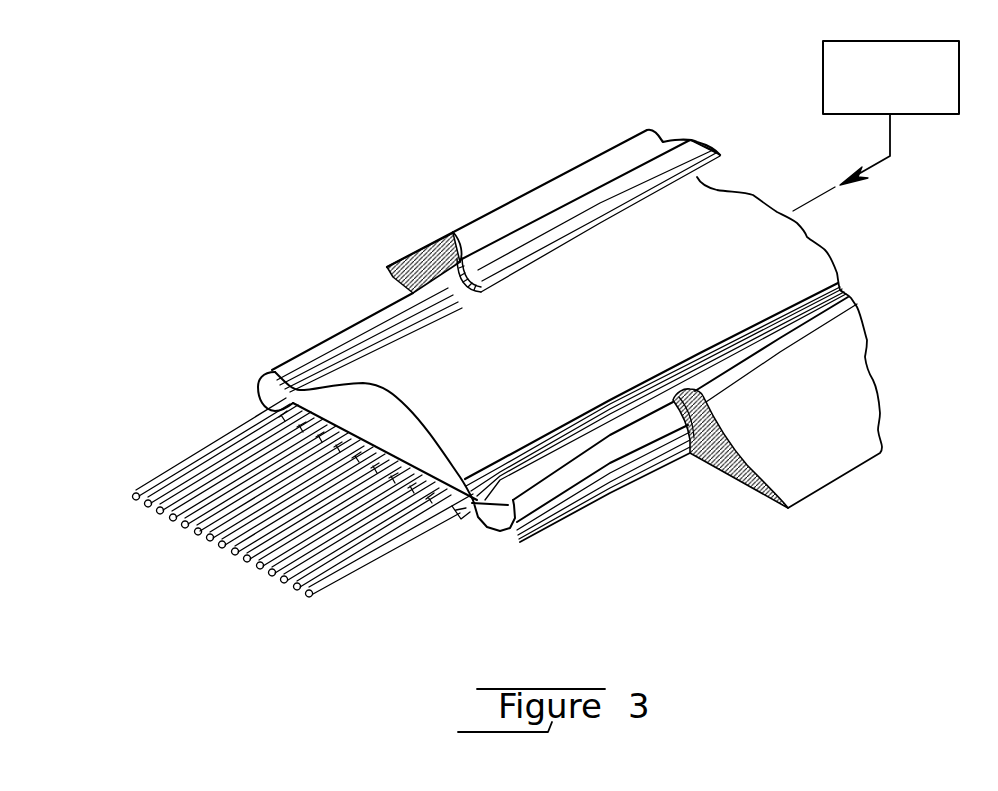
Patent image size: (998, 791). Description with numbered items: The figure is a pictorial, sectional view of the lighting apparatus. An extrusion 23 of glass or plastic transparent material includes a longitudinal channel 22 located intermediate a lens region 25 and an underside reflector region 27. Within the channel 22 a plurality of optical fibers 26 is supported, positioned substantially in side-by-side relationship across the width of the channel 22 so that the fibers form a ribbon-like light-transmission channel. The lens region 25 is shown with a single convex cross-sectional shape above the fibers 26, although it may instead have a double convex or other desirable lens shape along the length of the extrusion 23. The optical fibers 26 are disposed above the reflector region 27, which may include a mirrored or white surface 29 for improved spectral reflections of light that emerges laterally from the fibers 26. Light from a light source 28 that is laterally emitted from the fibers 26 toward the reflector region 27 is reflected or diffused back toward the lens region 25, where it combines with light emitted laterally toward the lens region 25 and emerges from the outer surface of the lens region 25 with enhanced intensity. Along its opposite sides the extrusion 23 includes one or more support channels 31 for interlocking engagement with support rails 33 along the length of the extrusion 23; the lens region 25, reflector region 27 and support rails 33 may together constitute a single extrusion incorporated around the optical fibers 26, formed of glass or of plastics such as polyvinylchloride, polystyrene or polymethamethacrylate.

The longitudinal channel 22 is at (512, 532).
The extrusion 23 is at (263, 388).
The lens region 25 is at (423, 447).
The optical fibers 26 is at (168, 459).
The reflector region 27 is at (460, 516).
The light source 28 is at (928, 113).
The mirrored or white surface 29 is at (430, 515).
The support channel 31 is at (452, 254).
The support rail 33 is at (396, 278).